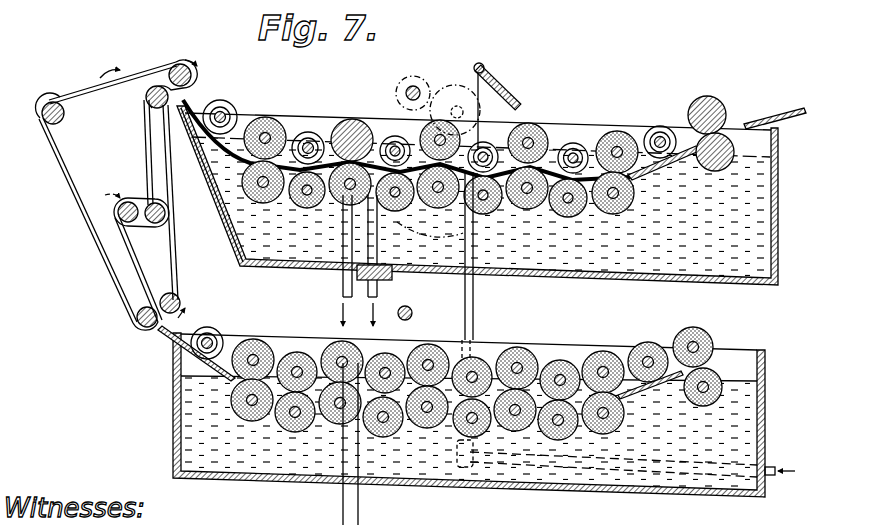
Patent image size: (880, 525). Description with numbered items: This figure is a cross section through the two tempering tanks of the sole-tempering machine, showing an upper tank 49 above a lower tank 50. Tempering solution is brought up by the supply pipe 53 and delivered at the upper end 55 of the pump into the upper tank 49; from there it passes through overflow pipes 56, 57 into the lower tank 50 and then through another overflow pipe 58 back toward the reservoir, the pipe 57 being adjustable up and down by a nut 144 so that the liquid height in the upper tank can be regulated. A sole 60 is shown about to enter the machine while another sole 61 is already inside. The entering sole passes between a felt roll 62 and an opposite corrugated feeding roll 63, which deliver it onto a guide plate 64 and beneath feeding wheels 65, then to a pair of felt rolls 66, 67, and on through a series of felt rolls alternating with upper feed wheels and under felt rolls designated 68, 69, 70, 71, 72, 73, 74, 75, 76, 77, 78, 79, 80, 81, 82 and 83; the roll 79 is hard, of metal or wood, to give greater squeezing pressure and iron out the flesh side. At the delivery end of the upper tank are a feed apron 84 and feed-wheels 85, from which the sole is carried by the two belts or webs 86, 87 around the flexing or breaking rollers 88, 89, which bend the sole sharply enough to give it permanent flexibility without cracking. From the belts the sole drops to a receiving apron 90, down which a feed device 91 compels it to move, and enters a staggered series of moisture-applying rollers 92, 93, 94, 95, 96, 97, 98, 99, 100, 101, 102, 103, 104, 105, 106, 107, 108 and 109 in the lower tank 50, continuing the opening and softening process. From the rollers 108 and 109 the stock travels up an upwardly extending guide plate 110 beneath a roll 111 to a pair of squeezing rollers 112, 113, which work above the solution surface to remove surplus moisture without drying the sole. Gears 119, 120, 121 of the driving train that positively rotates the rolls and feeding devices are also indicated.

The upper tank 49 is at (778, 196).
The lower tank 50 is at (765, 394).
The supply pipe 53 is at (473, 306).
The upper end of the pump 55 is at (512, 100).
The overflow pipe 56 is at (343, 292).
The overflow pipe 57 is at (377, 292).
The overflow pipe 58 is at (358, 511).
The sole 60 is at (775, 116).
The sole 61 is at (556, 140).
The felt roll 62 is at (735, 150).
The corrugated feeding roll 63 is at (705, 96).
The guide plate 64 is at (664, 168).
The feeding wheels 65 is at (658, 125).
The felt roll 66 is at (622, 214).
The felt roll 67 is at (612, 131).
The felt roll 68 is at (572, 218).
The felt roll 69 is at (578, 143).
The felt roll 70 is at (526, 210).
The felt roll 71 is at (528, 123).
The felt roll 72 is at (485, 215).
The felt roll 73 is at (486, 142).
The felt roll 74 is at (436, 209).
The felt roll 75 is at (447, 122).
The felt roll 76 is at (390, 214).
The felt roll 77 is at (393, 136).
The felt roll 78 is at (340, 205).
The hard roll 79 is at (350, 119).
The felt roll 80 is at (300, 210).
The felt roll 81 is at (308, 132).
The felt roll 82 is at (222, 210).
The felt roll 83 is at (265, 117).
The feed apron 84 is at (172, 104).
The feed-wheels 85 is at (224, 100).
The belt 86 is at (178, 265).
The belt 87 is at (100, 86).
The flexing roller 88 is at (152, 200).
The flexing roller 89 is at (120, 198).
The receiving apron 90 is at (178, 350).
The feed device 91 is at (212, 327).
The moisture-applying roller 92 is at (250, 421).
The moisture-applying roller 93 is at (258, 342).
The moisture-applying roller 94 is at (292, 432).
The moisture-applying roller 95 is at (300, 352).
The moisture-applying roller 96 is at (338, 424).
The moisture-applying roller 97 is at (344, 343).
The moisture-applying roller 98 is at (383, 437).
The moisture-applying roller 99 is at (388, 348).
The moisture-applying roller 100 is at (430, 428).
The moisture-applying roller 101 is at (433, 345).
The moisture-applying roller 102 is at (473, 451).
The moisture-applying roller 103 is at (478, 358).
The moisture-applying roller 104 is at (518, 432).
The moisture-applying roller 105 is at (526, 349).
The moisture-applying roller 106 is at (562, 441).
The moisture-applying roller 107 is at (570, 362).
The moisture-applying roller 108 is at (612, 432).
The moisture-applying roller 109 is at (612, 352).
The guide plate 110 is at (650, 400).
The roll 111 is at (650, 341).
The squeezing roller 112 is at (720, 380).
The squeezing roller 113 is at (713, 340).
The gear 119 is at (413, 76).
The gear 120 is at (479, 63).
The gear 121 is at (465, 236).
The nut 144 is at (392, 276).